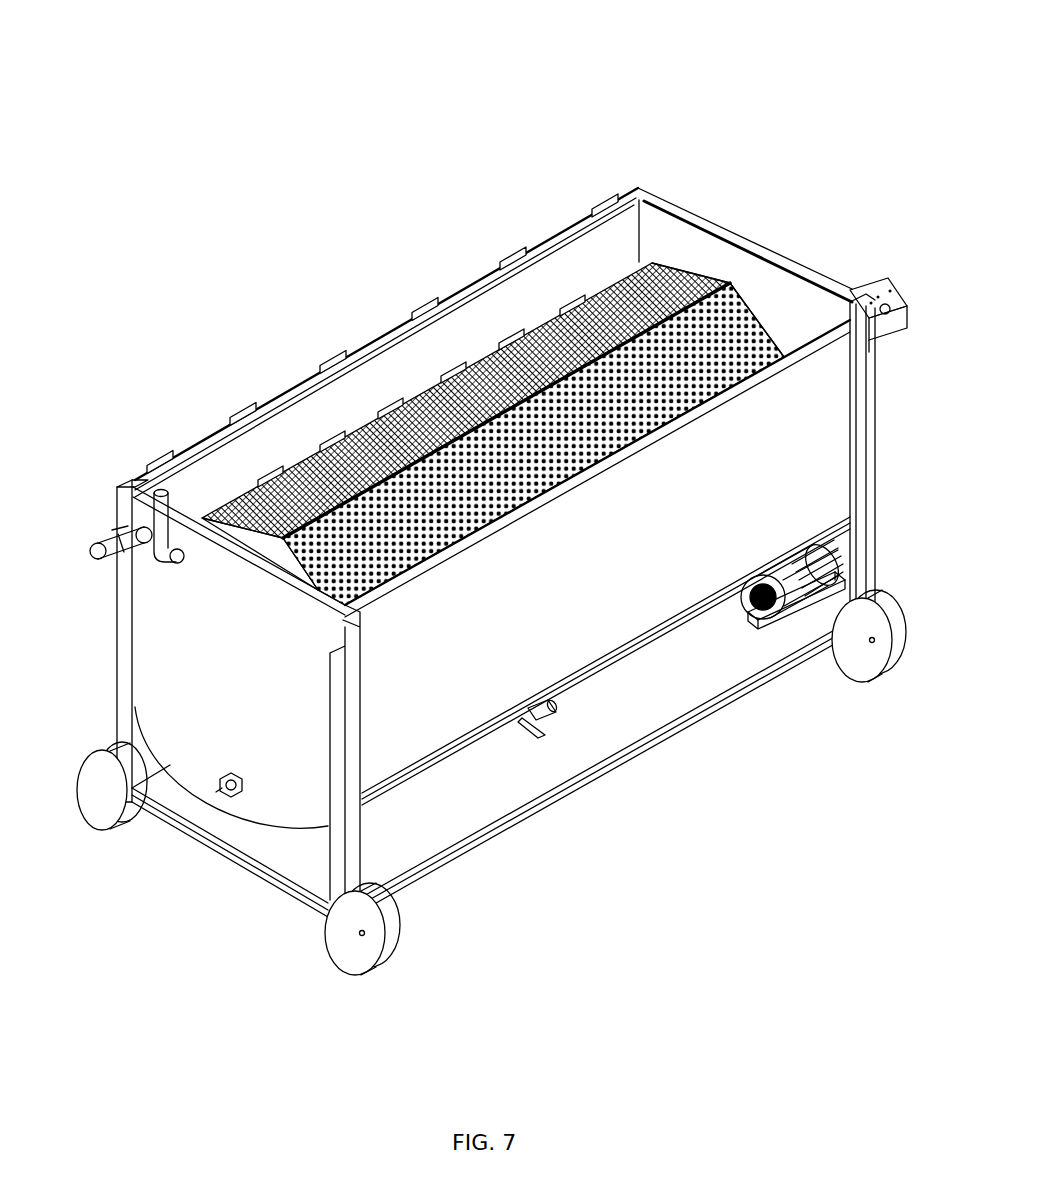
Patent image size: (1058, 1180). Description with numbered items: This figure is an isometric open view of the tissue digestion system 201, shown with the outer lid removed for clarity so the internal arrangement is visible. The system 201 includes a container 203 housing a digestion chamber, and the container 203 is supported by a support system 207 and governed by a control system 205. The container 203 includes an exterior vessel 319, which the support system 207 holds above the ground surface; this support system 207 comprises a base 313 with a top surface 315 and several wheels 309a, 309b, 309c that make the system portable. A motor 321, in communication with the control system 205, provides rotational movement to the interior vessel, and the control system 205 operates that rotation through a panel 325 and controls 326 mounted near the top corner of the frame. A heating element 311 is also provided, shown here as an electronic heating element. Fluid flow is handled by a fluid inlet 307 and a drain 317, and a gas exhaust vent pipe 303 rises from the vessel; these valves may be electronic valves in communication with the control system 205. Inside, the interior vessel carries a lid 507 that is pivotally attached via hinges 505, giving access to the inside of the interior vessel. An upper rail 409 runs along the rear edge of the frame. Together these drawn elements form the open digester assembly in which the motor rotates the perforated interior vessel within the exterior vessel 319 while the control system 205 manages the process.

The tissue digestion system 201 is at (819, 87).
The container 203 is at (530, 180).
The control system 205 is at (848, 722).
The support system 207 is at (230, 1026).
The gas exhaust vent pipe 303 is at (160, 488).
The fluid inlet 307 is at (112, 548).
The wheel 309a is at (92, 770).
The wheel 309b is at (392, 945).
The wheel 309c is at (900, 605).
The heating element 311 is at (227, 792).
The base 313 is at (232, 863).
The top surface 315 is at (477, 830).
The drain 317 is at (540, 733).
The exterior vessel 319 is at (617, 656).
The motor 321 is at (775, 622).
The panel 325 is at (873, 292).
The controls 326 is at (888, 305).
The upper rail 409 is at (331, 352).
The hinge 505 is at (402, 383).
The lid 507 is at (687, 266).